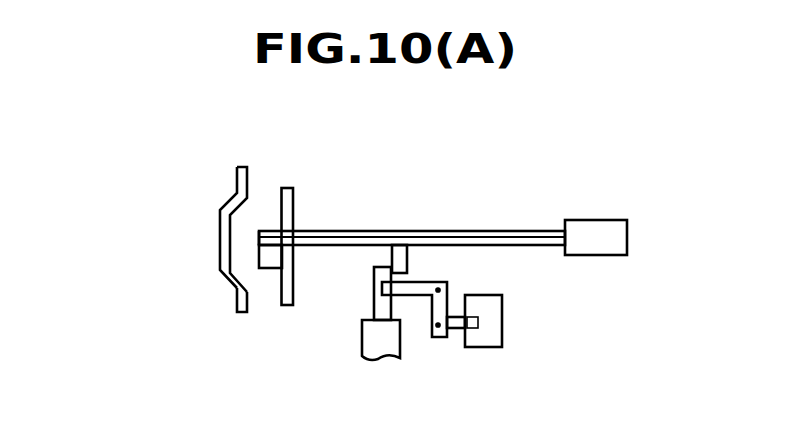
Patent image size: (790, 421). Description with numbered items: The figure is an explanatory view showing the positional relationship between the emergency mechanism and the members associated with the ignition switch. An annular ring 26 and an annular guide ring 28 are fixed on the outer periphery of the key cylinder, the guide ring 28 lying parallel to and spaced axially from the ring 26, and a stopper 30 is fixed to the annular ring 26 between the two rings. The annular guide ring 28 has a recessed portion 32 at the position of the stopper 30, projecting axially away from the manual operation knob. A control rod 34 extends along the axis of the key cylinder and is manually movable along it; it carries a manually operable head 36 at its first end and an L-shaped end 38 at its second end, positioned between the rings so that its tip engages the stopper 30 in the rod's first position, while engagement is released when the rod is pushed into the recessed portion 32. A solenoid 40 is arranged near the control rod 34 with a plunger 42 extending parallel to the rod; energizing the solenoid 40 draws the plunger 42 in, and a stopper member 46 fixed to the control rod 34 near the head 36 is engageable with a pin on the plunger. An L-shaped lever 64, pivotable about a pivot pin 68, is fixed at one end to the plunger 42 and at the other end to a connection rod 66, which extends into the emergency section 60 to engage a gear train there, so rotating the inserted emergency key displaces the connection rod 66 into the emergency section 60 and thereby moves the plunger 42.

The annular ring 26 is at (290, 205).
The annular guide ring 28 is at (240, 297).
The stopper 30 is at (265, 270).
The recessed portion 32 is at (223, 240).
The control rod 34 is at (523, 232).
The manually operable head 36 is at (603, 228).
The L-shaped end 38 is at (253, 233).
The solenoid 40 is at (368, 340).
The plunger 42 is at (382, 303).
The stopper member 46 is at (403, 260).
The emergency section 60 is at (502, 322).
The L-shaped lever 64 is at (412, 297).
The connection rod 66 is at (453, 332).
The pivot pin 68 is at (444, 288).